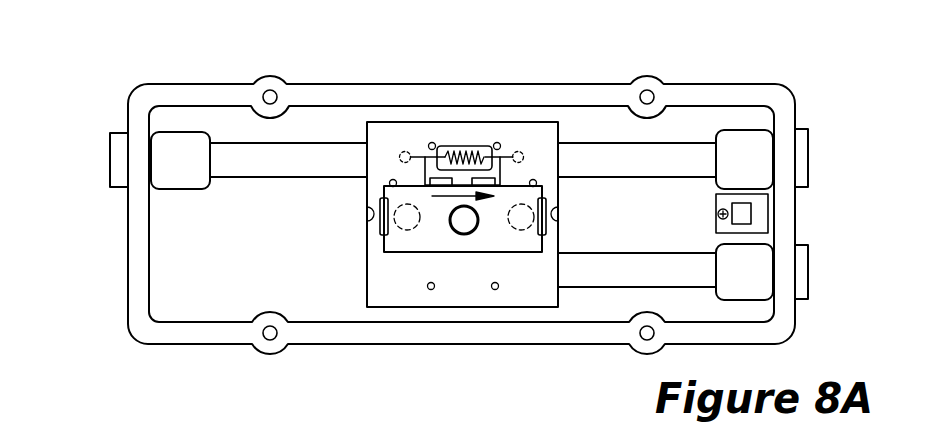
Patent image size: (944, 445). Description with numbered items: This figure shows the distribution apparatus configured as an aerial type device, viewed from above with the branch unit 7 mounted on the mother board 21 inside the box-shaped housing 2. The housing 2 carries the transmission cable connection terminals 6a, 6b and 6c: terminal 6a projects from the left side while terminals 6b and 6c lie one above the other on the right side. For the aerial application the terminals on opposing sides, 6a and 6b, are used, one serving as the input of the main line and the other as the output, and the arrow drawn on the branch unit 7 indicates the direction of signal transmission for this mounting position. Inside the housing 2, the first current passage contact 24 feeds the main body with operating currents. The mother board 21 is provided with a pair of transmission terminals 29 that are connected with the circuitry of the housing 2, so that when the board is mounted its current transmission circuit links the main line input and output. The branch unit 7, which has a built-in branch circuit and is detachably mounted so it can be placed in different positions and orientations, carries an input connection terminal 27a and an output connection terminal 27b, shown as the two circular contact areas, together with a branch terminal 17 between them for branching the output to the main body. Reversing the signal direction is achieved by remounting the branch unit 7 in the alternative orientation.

The housing 2 is at (792, 102).
The transmission cable connection terminal 6a is at (112, 168).
The transmission cable connection terminal 6b is at (808, 155).
The transmission cable connection terminal 6c is at (808, 270).
The branch unit 7 is at (516, 190).
The branch terminal 17 is at (463, 226).
The mother board 21 is at (395, 121).
The first current passage contact 24 is at (751, 212).
The input connection terminal 27a is at (521, 222).
The output connection terminal 27b is at (407, 222).
The transmission terminals 29 is at (401, 153).